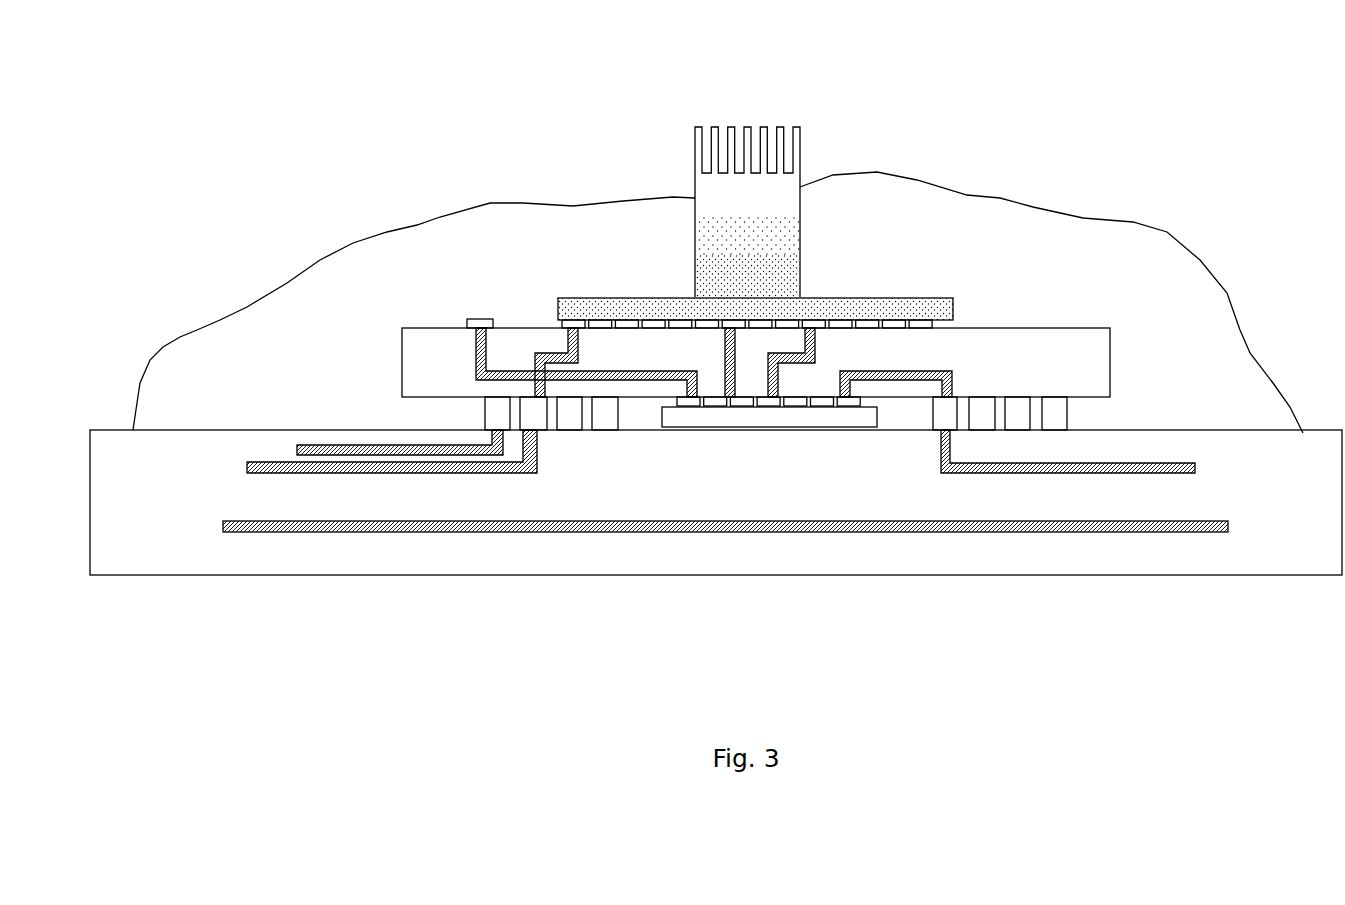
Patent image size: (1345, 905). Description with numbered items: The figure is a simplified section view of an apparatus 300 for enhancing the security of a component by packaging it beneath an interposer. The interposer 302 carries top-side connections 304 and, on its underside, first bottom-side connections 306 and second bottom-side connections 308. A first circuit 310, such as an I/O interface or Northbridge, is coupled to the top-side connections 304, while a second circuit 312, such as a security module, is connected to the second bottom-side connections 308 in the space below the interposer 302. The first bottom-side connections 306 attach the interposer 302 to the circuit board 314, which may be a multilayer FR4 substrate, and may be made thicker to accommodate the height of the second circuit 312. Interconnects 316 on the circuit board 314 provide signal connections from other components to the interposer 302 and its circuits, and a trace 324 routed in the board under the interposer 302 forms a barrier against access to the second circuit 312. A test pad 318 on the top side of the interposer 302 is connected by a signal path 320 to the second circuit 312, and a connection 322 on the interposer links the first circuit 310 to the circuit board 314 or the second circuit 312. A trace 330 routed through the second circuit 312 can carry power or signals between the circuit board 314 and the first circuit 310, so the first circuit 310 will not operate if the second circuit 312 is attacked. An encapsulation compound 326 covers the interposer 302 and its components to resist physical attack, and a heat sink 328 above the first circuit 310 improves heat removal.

The apparatus 300 is at (484, 41).
The interposer 302 is at (1110, 360).
The top-side connections 304 is at (940, 327).
The first bottom-side connections 306 is at (485, 417).
The second bottom-side connections 308 is at (777, 406).
The first circuit 310 is at (865, 297).
The second circuit 312 is at (730, 427).
The circuit board 314 is at (487, 577).
The interconnects 316 is at (280, 462).
The test pad 318 is at (478, 319).
The signal path 320 is at (402, 360).
The connection 322 is at (540, 353).
The trace 324 is at (728, 533).
The encapsulation compound 326 is at (497, 198).
The heat sink 328 is at (695, 222).
The trace 330 is at (818, 350).